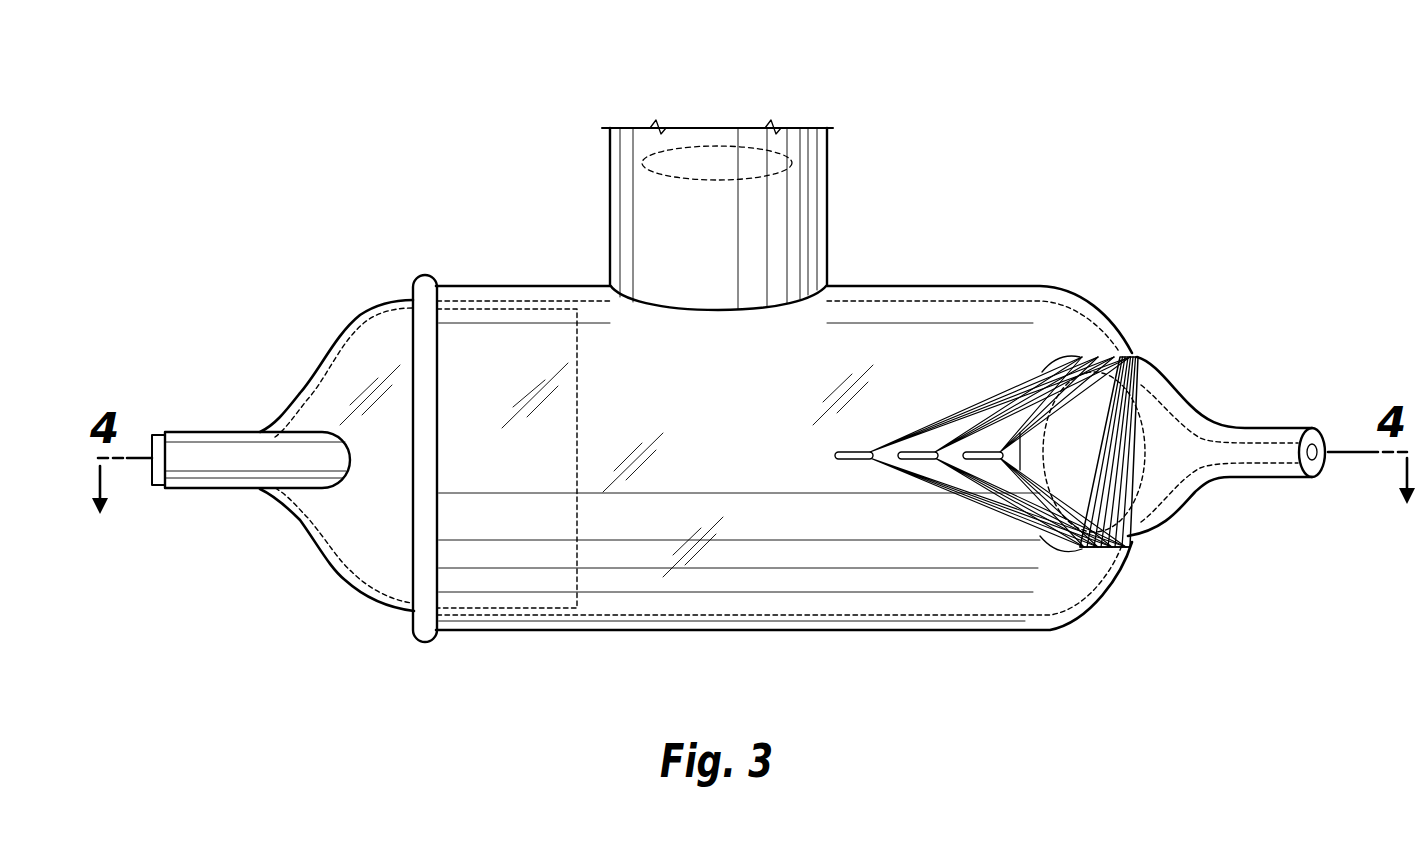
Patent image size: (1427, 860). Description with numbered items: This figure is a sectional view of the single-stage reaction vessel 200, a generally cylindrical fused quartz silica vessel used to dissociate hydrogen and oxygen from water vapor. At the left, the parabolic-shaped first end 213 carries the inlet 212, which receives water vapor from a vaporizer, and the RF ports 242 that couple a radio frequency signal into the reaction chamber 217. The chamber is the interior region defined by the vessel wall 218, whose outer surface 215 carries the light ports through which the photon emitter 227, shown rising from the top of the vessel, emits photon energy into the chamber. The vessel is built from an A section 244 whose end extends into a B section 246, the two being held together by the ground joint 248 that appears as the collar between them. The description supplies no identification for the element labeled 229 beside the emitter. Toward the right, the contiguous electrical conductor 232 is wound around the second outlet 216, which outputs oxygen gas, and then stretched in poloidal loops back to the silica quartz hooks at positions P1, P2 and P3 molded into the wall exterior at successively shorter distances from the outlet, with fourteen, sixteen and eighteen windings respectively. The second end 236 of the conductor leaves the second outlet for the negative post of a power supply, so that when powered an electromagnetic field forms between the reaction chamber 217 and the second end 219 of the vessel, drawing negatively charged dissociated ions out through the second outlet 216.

The reaction vessel 200 is at (1040, 143).
The inlet 212 is at (155, 433).
The first end 213 is at (300, 392).
The outer surface 215 is at (541, 285).
The second outlet 216 is at (1288, 470).
The reaction chamber 217 is at (762, 468).
The vessel wall 218 is at (884, 278).
The second end 219 is at (1100, 620).
The photon emitter 227 is at (713, 146).
The cylindrical neck 229 is at (610, 160).
The contiguous electrical conductor 232 is at (1142, 349).
The second end 236 is at (1130, 550).
The RF ports 242 is at (238, 481).
The A section 244 is at (330, 330).
The B section 246 is at (457, 278).
The ground joint 248 is at (398, 297).
The position P1 is at (838, 460).
The position P2 is at (904, 460).
The position P3 is at (967, 460).